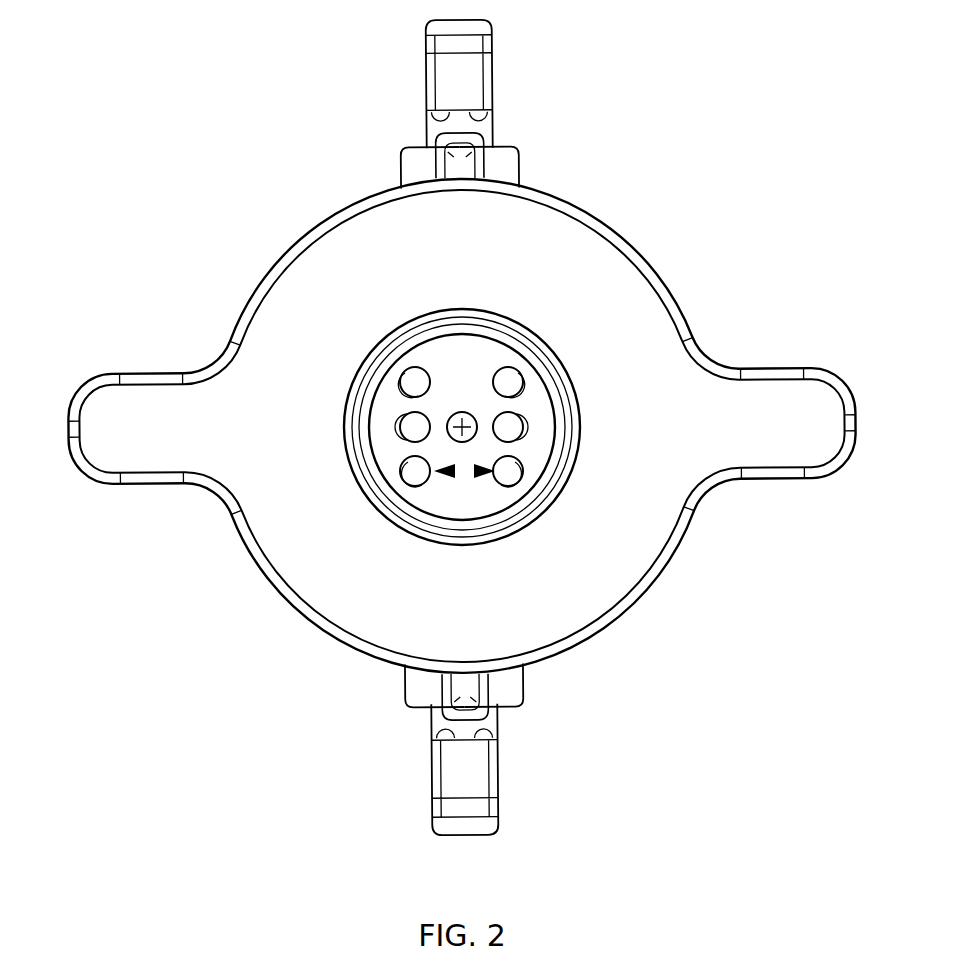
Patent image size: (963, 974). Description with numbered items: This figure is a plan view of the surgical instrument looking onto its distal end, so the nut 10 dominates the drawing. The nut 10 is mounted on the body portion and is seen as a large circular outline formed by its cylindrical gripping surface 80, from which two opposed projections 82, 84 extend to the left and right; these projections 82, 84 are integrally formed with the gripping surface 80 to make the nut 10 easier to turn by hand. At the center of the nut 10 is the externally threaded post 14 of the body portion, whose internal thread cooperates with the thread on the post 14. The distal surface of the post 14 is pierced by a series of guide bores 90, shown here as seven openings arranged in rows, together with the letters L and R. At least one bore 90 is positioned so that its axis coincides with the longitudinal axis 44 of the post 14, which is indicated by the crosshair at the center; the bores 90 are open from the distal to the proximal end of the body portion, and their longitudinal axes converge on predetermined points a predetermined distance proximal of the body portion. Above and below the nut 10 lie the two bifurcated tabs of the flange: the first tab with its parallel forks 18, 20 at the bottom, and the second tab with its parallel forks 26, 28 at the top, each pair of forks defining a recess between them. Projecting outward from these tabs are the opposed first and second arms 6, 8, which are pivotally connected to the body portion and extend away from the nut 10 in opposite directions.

The first arm 6 is at (416, 775).
The second arm 8 is at (414, 75).
The nut 10 is at (577, 200).
The post 14 is at (384, 456).
The fork 18 is at (417, 691).
The fork 20 is at (515, 689).
The fork 26 is at (410, 169).
The fork 28 is at (503, 163).
The longitudinal axis 44 is at (451, 435).
The cylindrical gripping surface 80 is at (235, 296).
The projection 82 is at (101, 413).
The projection 84 is at (816, 401).
The guide bores 90 is at (522, 425).